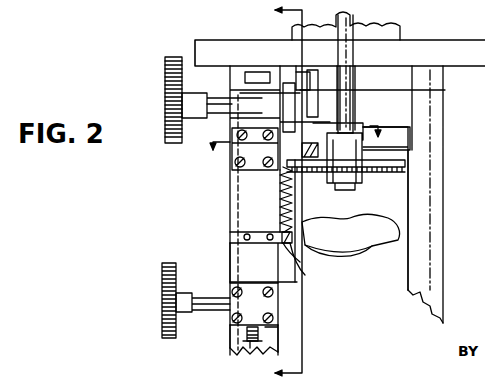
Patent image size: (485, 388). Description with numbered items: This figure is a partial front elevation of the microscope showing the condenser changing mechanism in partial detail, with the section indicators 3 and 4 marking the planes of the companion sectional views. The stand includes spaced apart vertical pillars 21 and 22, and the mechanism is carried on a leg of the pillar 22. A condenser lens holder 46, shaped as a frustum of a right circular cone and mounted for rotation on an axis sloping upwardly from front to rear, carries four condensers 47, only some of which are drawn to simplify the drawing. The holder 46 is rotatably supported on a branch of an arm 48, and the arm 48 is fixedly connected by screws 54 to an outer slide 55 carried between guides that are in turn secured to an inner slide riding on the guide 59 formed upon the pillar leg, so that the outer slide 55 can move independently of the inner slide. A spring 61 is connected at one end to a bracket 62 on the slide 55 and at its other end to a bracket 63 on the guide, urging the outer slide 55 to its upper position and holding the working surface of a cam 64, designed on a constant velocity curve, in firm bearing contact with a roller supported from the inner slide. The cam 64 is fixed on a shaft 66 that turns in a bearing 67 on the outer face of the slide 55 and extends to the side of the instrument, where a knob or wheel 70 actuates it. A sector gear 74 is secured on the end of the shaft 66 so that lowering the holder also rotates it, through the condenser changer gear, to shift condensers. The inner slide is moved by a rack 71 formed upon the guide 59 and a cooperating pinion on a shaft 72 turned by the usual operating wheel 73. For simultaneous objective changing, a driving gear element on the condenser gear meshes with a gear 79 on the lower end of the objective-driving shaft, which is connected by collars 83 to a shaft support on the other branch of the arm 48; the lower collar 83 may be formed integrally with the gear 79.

The section line 3- 3 is at (279, 194).
The section line 4- 4 is at (298, 147).
The vertical pillar 21 is at (432, 273).
The vertical pillar 22 is at (272, 340).
The condenser lens holder 46 is at (360, 250).
The condensers 47 is at (338, 230).
The arm 48 is at (270, 157).
The screws 54 is at (242, 155).
The outer slide 55 is at (240, 223).
The guide 59 is at (254, 350).
The spring 61 is at (284, 236).
The bracket 62 is at (292, 236).
The bracket 63 is at (283, 172).
The cam 64 is at (310, 72).
The shaft 66 is at (210, 114).
The bearing 67 is at (260, 108).
The knob or wheel 70 is at (165, 72).
The rack 71 is at (247, 333).
The shaft 72 is at (207, 305).
The operating wheel 73 is at (163, 298).
The sector gear 74 is at (300, 85).
The gear 79 is at (313, 172).
The collars 83 is at (335, 176).